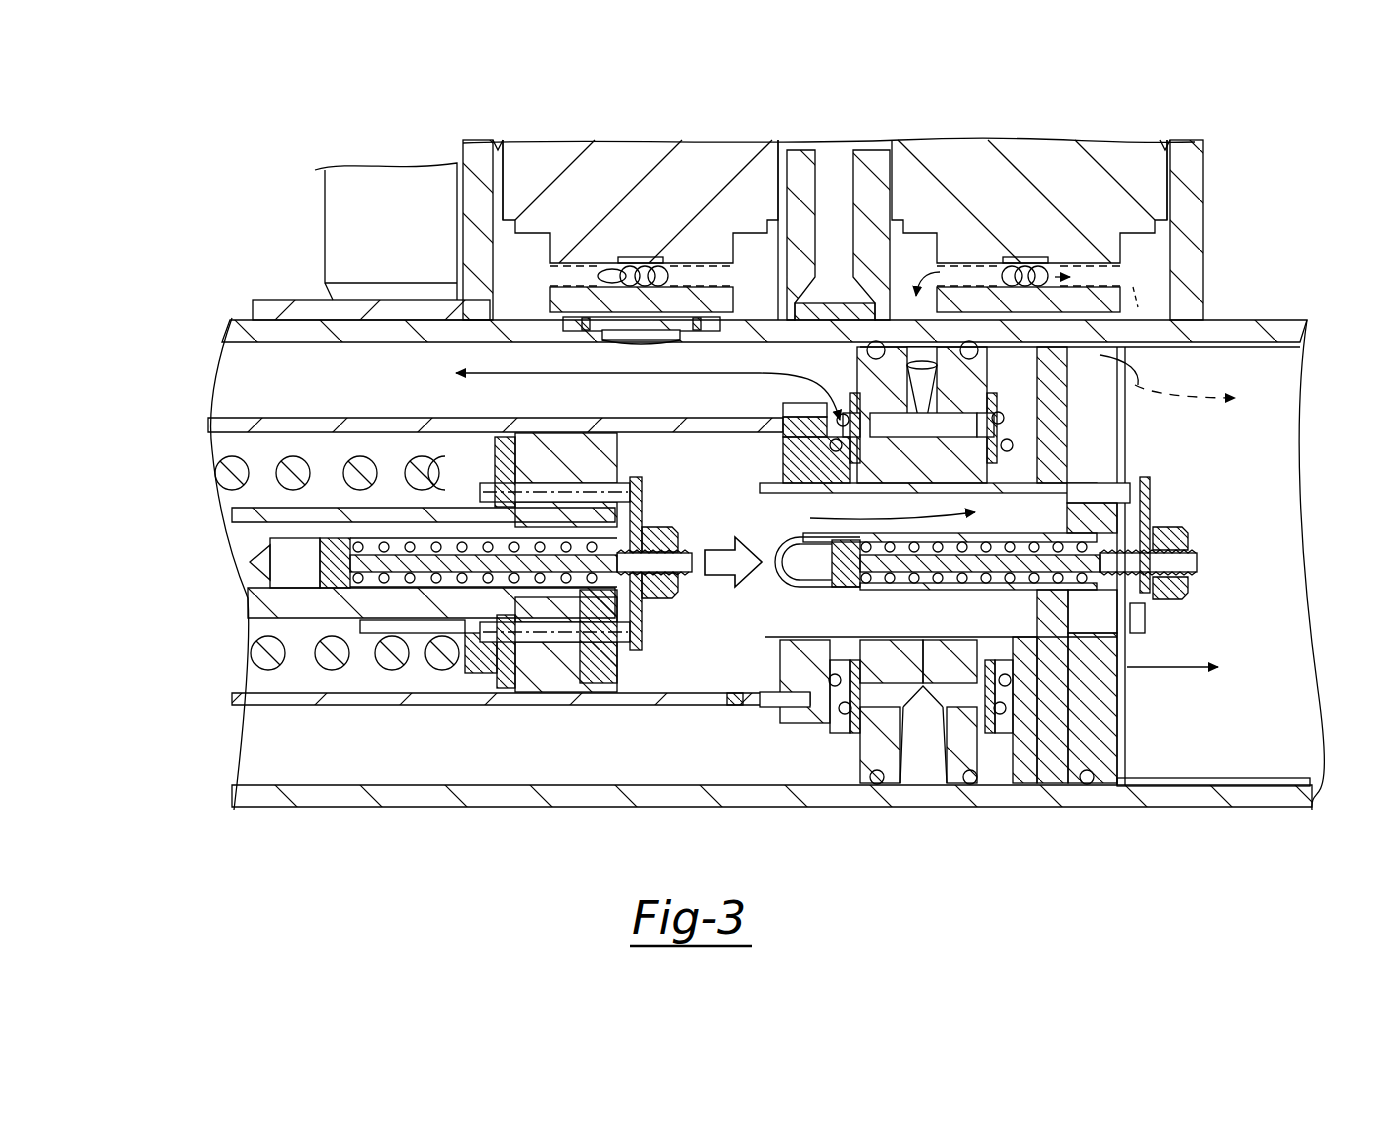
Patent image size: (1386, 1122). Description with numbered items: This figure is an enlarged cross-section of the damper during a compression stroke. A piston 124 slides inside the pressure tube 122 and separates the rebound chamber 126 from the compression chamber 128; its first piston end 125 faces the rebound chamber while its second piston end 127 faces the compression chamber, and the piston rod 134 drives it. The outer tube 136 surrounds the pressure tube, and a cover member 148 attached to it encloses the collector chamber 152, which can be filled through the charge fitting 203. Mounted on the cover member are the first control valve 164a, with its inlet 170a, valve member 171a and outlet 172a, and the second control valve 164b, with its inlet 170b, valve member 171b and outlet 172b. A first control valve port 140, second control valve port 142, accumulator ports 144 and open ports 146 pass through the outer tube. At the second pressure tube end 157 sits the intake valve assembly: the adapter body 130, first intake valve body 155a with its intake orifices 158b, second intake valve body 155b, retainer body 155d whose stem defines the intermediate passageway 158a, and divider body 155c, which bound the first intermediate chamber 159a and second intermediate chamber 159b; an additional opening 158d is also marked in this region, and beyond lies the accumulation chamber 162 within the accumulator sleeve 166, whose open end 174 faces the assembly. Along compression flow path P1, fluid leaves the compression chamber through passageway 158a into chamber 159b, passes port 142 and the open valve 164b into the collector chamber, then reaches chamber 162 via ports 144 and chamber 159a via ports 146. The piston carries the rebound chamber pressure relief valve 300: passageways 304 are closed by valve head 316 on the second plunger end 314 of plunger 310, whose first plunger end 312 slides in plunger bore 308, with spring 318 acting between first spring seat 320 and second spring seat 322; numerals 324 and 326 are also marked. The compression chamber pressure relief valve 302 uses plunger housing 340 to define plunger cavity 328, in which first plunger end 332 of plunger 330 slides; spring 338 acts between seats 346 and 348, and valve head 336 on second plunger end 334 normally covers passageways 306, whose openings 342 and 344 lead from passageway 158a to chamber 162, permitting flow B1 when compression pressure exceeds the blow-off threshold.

The pressure tube 122 is at (308, 705).
The piston 124 is at (600, 517).
The first piston end 125 is at (497, 692).
The rebound chamber 126 is at (270, 688).
The second piston end 127 is at (630, 688).
The compression chamber 128 is at (558, 487).
The adapter body 130 is at (787, 787).
The piston rod 134 is at (265, 530).
The outer tube 136 is at (348, 800).
The first control valve port 140 is at (633, 450).
The second control valve port 142 is at (1100, 350).
The accumulator port 144 is at (1150, 305).
The open port 146 is at (868, 343).
The cover member 148 is at (282, 310).
The collector chamber 152 is at (523, 290).
The first intake valve body 155a is at (897, 755).
The second intake valve body 155b is at (942, 750).
The divider body 155c is at (1130, 612).
The retainer body 155d is at (1025, 715).
The second pressure tube end 157 is at (782, 420).
The intermediate passageway 158a is at (783, 637).
The first set of intake orifices 158b is at (862, 655).
The seal block 158d is at (962, 660).
The first intermediate chamber 159a is at (922, 750).
The second intermediate chamber 159b is at (1060, 385).
The accumulation chamber 162 is at (1265, 435).
The first control valve 164a is at (506, 135).
The second control valve 164b is at (1170, 137).
The accumulator sleeve 166 is at (1300, 805).
The first control valve inlet 170a is at (630, 310).
The second control valve inlet 170b is at (1055, 297).
The first valve member 171a is at (637, 160).
The second valve member 171b is at (1035, 160).
The first control valve outlet 172a is at (700, 270).
The second control valve outlet 172b is at (940, 268).
The open end 174 is at (1121, 800).
The charge fitting 203 is at (345, 182).
The rebound chamber pressure relief valve 300 is at (682, 533).
The compression chamber pressure relief valve 302 is at (1243, 503).
The rebound chamber pressure relief passageway 304 is at (538, 483).
The compression chamber pressure relief passageway 306 is at (1103, 490).
The plunger bore 308 is at (275, 557).
The plunger 310 is at (405, 600).
The first plunger end 312 is at (327, 575).
The second plunger end 314 is at (705, 590).
The valve head 316 is at (642, 613).
The spring 318 is at (435, 593).
The first spring seat 320 is at (373, 580).
The second spring seat 322 is at (592, 683).
The pin 324 is at (512, 483).
The washer 326 is at (643, 483).
The plunger cavity 328 is at (822, 560).
The plunger 330 is at (1042, 610).
The first plunger end 332 is at (778, 578).
The second plunger end 334 is at (1208, 560).
The valve head 336 is at (1147, 607).
The spring 338 is at (990, 647).
The plunger housing 340 is at (930, 543).
The first compression passageway opening 342 is at (1062, 490).
The second compression passageway opening 344 is at (1140, 487).
The first spring seat 346 is at (862, 590).
The second spring seat 348 is at (1100, 505).
The fluid flow B1 is at (1193, 672).
The compression flow path P1 is at (480, 373).